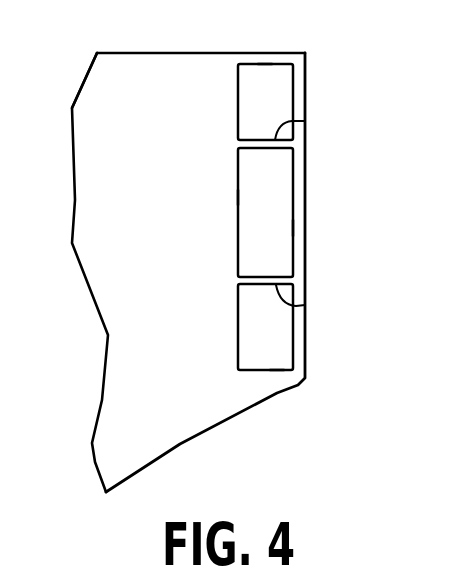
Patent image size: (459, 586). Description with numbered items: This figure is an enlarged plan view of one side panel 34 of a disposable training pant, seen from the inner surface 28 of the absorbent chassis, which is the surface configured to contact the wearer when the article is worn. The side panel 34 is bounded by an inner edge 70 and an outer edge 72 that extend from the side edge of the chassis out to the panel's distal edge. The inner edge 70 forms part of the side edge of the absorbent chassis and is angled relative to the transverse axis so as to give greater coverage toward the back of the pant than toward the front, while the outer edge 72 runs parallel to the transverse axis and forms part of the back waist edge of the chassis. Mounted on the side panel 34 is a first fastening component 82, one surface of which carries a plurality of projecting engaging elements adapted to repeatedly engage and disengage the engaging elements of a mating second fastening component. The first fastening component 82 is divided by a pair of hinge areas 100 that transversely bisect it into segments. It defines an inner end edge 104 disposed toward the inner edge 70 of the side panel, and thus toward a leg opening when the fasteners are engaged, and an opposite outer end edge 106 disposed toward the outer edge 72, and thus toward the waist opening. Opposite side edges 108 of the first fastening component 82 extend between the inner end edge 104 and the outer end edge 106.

The inner surface 28 is at (107, 281).
The side panel 34 is at (106, 83).
The inner edge 70 is at (160, 455).
The outer edge 72 is at (150, 53).
The first fastening component 82 is at (302, 74).
The hinge area 100 is at (305, 121).
The inner end edge 104 is at (277, 370).
The outer end edge 106 is at (265, 64).
The side edge 108 is at (238, 197).